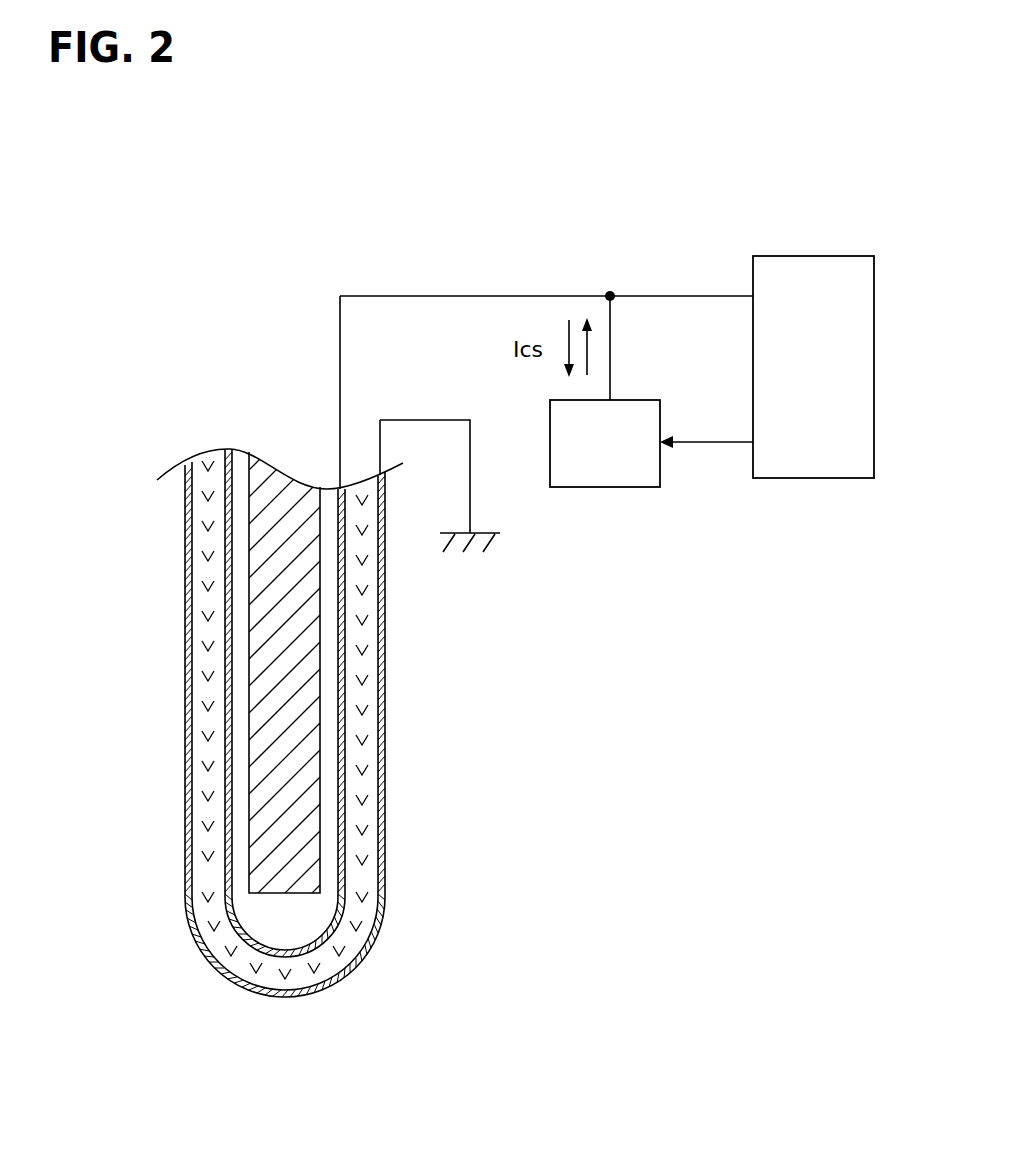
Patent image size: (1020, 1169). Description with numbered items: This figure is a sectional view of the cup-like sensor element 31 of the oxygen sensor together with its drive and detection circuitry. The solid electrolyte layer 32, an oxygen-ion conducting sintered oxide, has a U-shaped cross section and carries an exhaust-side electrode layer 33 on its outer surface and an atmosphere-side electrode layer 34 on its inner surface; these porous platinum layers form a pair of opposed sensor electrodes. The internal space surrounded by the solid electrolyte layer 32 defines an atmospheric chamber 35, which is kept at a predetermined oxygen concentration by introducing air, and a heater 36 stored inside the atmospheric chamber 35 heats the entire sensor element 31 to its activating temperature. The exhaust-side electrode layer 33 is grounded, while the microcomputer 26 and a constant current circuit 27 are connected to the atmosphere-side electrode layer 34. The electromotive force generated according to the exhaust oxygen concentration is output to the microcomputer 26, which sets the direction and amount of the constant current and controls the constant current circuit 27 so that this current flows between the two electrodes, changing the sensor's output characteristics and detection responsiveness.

The microcomputer 26 is at (812, 478).
The constant current circuit 27 is at (610, 487).
The sensor element 31 is at (138, 497).
The solid electrolyte layer 32 is at (198, 633).
The exhaust-side electrode layer 33 is at (187, 693).
The atmosphere-side electrode layer 34 is at (225, 737).
The atmospheric chamber 35 is at (277, 923).
The heater 36 is at (250, 843).